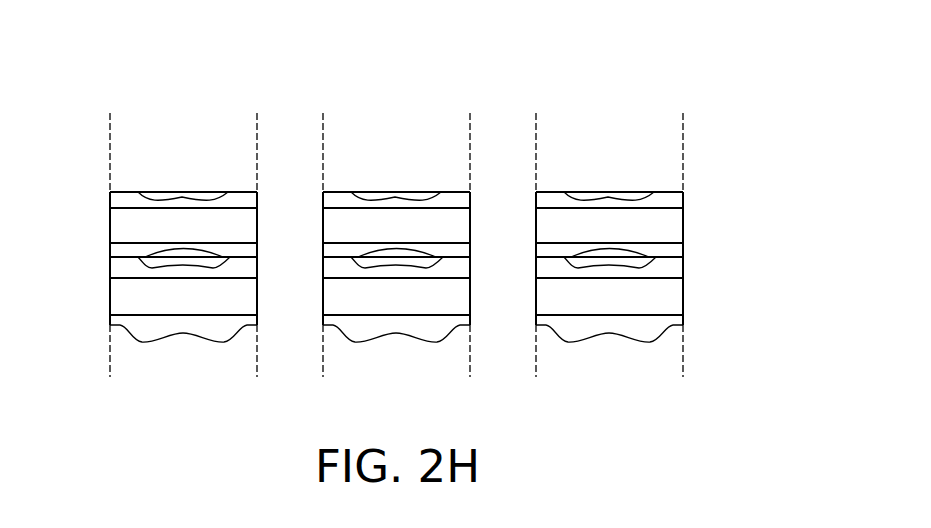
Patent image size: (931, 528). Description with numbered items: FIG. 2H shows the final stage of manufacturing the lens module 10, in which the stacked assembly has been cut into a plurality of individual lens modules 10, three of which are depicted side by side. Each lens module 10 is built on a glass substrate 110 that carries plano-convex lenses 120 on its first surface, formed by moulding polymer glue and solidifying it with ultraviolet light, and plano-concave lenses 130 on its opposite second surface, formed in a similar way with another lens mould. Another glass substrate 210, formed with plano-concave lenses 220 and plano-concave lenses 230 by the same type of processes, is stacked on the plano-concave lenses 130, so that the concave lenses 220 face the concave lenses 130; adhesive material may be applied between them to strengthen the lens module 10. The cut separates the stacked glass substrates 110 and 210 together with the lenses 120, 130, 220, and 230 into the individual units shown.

The lens module 10 is at (133, 104).
The glass substrate 110 is at (673, 298).
The plano-convex lenses 120 is at (410, 328).
The plano-concave lenses 130 is at (342, 268).
The glass substrate 210 is at (673, 225).
The plano-concave lenses 220 is at (343, 250).
The plano-concave lenses 230 is at (453, 197).